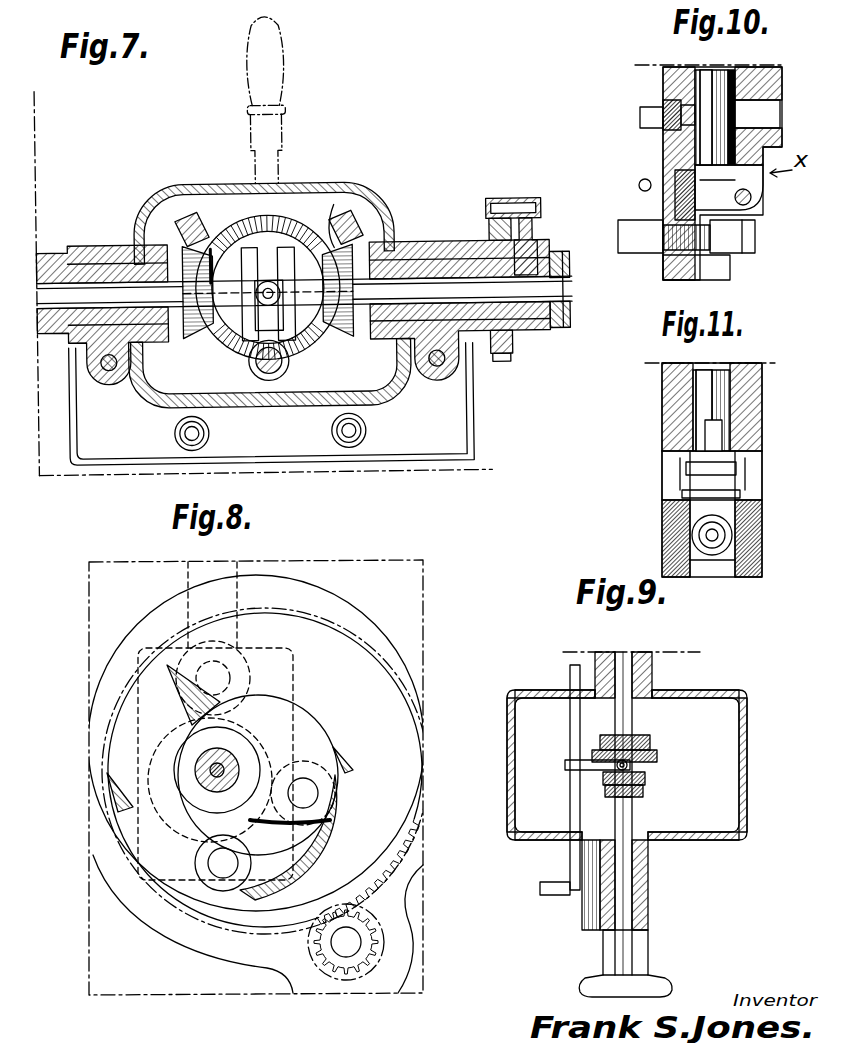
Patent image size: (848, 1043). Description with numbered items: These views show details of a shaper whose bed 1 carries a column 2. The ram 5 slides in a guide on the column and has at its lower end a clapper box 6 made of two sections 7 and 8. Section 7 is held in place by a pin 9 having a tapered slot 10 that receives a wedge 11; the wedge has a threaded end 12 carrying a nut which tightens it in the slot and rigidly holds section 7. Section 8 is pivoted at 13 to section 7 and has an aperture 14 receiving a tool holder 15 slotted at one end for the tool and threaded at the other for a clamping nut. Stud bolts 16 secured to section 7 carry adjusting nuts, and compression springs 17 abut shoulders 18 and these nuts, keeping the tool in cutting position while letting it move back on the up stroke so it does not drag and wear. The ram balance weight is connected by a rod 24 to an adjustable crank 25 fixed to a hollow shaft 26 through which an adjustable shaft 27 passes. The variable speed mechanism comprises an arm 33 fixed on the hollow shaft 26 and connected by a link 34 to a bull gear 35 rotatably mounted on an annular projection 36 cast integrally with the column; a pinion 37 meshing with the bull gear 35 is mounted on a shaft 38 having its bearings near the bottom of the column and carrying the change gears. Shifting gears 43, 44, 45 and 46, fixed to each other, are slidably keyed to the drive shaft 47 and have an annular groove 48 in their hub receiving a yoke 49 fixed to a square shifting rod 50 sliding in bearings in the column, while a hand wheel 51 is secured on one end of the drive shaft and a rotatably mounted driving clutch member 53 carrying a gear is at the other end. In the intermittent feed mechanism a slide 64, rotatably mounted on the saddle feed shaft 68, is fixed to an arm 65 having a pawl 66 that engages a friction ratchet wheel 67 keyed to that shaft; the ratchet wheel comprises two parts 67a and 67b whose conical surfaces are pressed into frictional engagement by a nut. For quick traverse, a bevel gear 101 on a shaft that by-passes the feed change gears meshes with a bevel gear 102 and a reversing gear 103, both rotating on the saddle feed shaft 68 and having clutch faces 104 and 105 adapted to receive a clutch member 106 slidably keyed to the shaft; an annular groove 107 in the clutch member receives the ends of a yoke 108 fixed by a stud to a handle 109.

In FIG. 7, the bed 1 is at (472, 412).
In FIG. 9, the column 2 is at (747, 755).
In FIG. 8, the column 2 is at (190, 988).
In FIG. 10, the ram 5 is at (782, 83).
In FIG. 11, the ram 5 is at (762, 410).
In FIG. 10, the clapper box 6 is at (765, 205).
In FIG. 11, the clapper box 6 is at (762, 462).
In FIG. 10, the section 7 is at (750, 210).
In FIG. 11, the section 7 is at (745, 484).
In FIG. 10, the section 8 is at (718, 278).
In FIG. 11, the section 8 is at (752, 540).
In FIG. 10, the pin 9 is at (663, 90).
In FIG. 11, the pin 9 is at (735, 395).
In FIG. 10, the tapered slot 10 is at (712, 128).
In FIG. 11, the tapered slot 10 is at (711, 410).
In FIG. 10, the wedge 11 is at (745, 115).
In FIG. 11, the wedge 11 is at (705, 432).
In FIG. 10, the threaded end 12 is at (663, 138).
In FIG. 10, the pivot 13 is at (733, 184).
In FIG. 10, the aperture 14 is at (745, 255).
In FIG. 10, the tool holder 15 is at (648, 253).
In FIG. 11, the tool holder 15 is at (690, 515).
In FIG. 10, the stud bolts 16 is at (663, 200).
In FIG. 11, the stud bolts 16 is at (680, 475).
In FIG. 10, the compression springs 17 is at (663, 235).
In FIG. 11, the compression springs 17 is at (670, 535).
In FIG. 10, the shoulders 18 is at (640, 184).
In FIG. 11, the shoulders 18 is at (682, 494).
In FIG. 8, the rod 24 is at (245, 590).
In FIG. 8, the adjustable crank 25 is at (293, 690).
In FIG. 8, the hollow shaft 26 is at (200, 783).
In FIG. 8, the adjustable shaft 27 is at (212, 768).
In FIG. 8, the arm 33 is at (262, 755).
In FIG. 8, the link 34 is at (300, 852).
In FIG. 8, the bull gear 35 is at (362, 876).
In FIG. 8, the annular projection 36 is at (305, 732).
In FIG. 8, the pinion 37 is at (372, 942).
In FIG. 8, the shaft 38 is at (346, 945).
In FIG. 9, the shifting gear 43 is at (643, 793).
In FIG. 9, the shifting gear 44 is at (645, 776).
In FIG. 9, the shifting gear 45 is at (657, 755).
In FIG. 9, the shifting gear 46 is at (650, 740).
In FIG. 9, the drive shaft 47 is at (632, 720).
In FIG. 9, the annular groove 48 is at (618, 798).
In FIG. 9, the yoke 49 is at (592, 770).
In FIG. 9, the square shifting rod 50 is at (572, 740).
In FIG. 9, the hand wheel 51 is at (648, 948).
In FIG. 9, the driving clutch member 53 is at (652, 660).
In FIG. 7, the slide 64 is at (573, 266).
In FIG. 7, the arm 65 is at (538, 240).
In FIG. 7, the pawl 66 is at (505, 201).
In FIG. 7, the friction ratchet wheel 67 is at (490, 232).
In FIG. 7, the part 67a is at (500, 364).
In FIG. 7, the part 67b is at (513, 345).
In FIG. 7, the saddle feed shaft 68 is at (82, 292).
In FIG. 7, the bevel gear 101 is at (308, 232).
In FIG. 7, the bevel gear 102 is at (194, 214).
In FIG. 7, the reversing gear 103 is at (341, 200).
In FIG. 7, the clutch face 104 is at (158, 200).
In FIG. 7, the clutch face 105 is at (352, 222).
In FIG. 7, the clutch member 106 is at (225, 340).
In FIG. 7, the annular groove 107 is at (262, 280).
In FIG. 7, the yoke 108 is at (270, 350).
In FIG. 7, the handle 109 is at (287, 68).